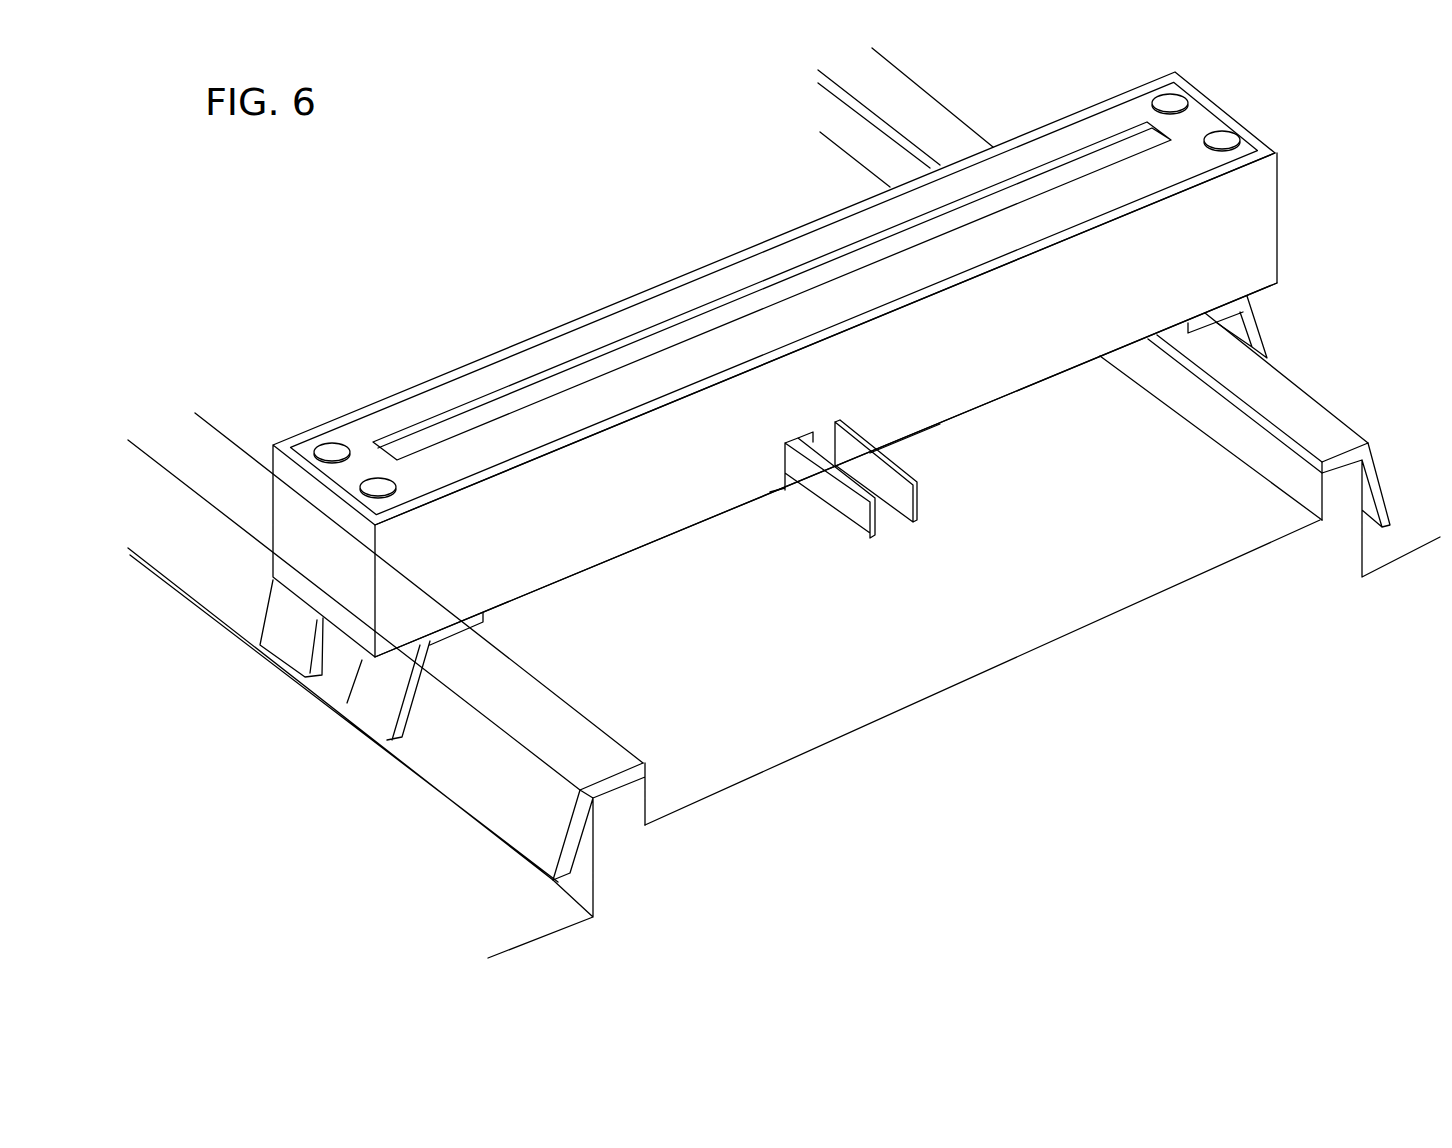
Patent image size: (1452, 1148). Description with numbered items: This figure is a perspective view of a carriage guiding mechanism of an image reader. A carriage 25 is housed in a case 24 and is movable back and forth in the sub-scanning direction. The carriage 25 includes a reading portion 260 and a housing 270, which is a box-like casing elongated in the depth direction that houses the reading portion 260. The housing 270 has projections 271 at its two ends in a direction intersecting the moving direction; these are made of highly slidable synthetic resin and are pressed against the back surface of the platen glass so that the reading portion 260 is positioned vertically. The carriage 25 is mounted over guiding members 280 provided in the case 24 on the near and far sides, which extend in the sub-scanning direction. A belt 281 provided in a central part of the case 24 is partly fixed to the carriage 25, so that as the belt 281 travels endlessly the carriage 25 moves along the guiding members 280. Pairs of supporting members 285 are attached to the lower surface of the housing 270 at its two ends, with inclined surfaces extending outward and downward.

The case 24 is at (798, 676).
The carriage 25 is at (708, 248).
The reading portion 260 is at (615, 323).
The housing 270 is at (705, 470).
The projections 271 is at (1166, 102).
The guiding members 280 is at (1377, 492).
The belt 281 is at (922, 497).
The supporting members 285 is at (287, 637).